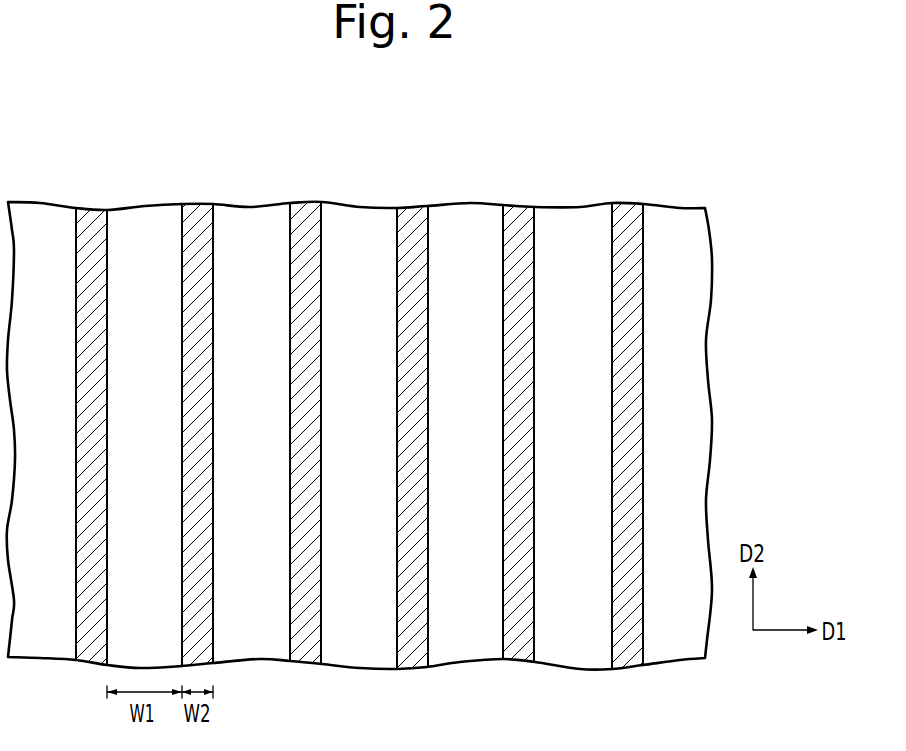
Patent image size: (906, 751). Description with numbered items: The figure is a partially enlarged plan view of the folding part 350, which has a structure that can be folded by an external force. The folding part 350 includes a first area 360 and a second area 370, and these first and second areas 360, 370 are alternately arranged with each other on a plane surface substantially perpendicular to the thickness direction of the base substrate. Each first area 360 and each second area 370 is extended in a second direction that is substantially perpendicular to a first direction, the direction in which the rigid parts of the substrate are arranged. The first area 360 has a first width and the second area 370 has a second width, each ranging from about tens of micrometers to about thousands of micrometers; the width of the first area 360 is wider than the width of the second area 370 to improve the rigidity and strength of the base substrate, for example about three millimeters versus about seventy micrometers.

The folding part 350 is at (571, 161).
The first area 360 is at (182, 200).
The second area 370 is at (213, 200).